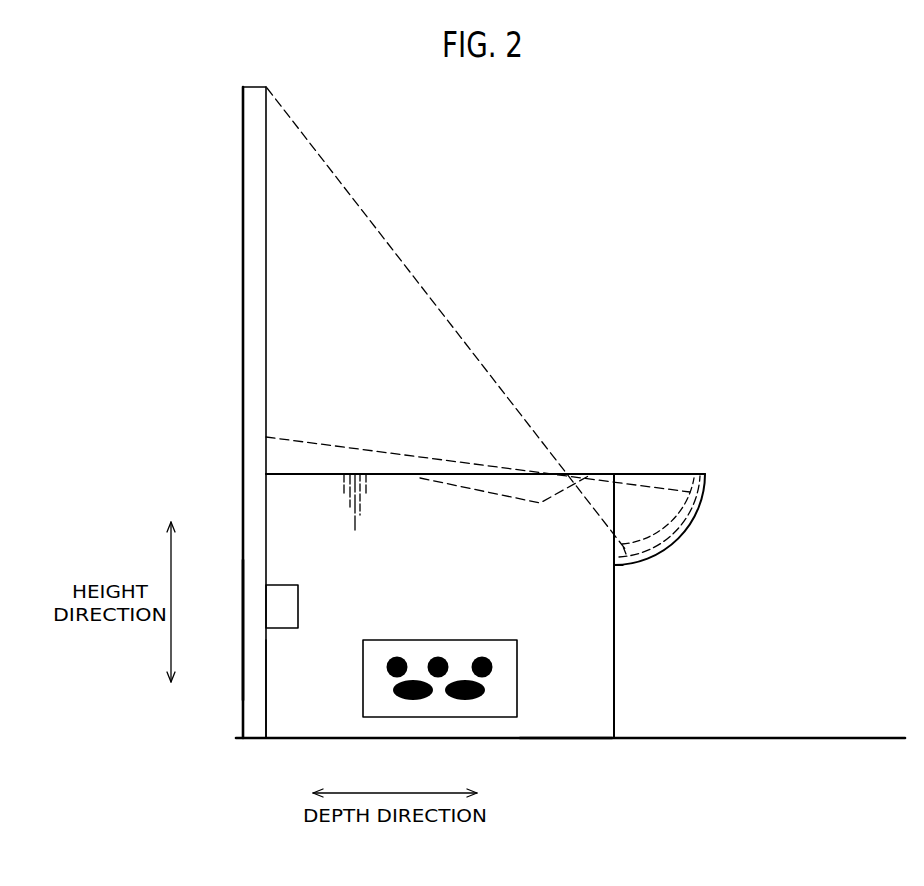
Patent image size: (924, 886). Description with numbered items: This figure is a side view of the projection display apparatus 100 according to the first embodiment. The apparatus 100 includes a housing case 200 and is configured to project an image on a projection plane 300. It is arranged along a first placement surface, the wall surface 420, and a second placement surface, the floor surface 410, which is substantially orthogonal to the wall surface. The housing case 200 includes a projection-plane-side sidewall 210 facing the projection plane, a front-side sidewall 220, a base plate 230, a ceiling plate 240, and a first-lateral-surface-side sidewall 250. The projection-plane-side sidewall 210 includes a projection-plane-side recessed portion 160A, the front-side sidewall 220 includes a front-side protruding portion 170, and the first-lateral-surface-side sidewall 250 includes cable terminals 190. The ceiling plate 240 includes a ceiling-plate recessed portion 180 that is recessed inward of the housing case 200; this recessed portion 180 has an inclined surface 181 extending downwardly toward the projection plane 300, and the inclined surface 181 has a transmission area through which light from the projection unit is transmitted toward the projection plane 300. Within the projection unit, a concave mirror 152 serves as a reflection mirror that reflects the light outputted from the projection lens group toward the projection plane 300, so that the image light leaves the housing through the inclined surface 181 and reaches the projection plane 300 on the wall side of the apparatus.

The projection display apparatus 100 is at (728, 440).
The concave mirror 152 is at (695, 520).
The projection-plane-side recessed portion 160A is at (298, 600).
The front-side protruding portion 170 is at (678, 541).
The ceiling-plate recessed portion 180 is at (480, 520).
The inclined surface 181 is at (562, 497).
The cable terminals 190 is at (450, 717).
The housing case 200 is at (614, 621).
The projection-plane-side sidewall 210 is at (266, 676).
The front-side sidewall 220 is at (614, 692).
The base plate 230 is at (555, 737).
The ceiling plate 240 is at (324, 474).
The first-lateral-surface-side sidewall 250 is at (283, 541).
The projection plane 300 is at (267, 318).
The floor surface 410 is at (830, 737).
The wall surface 420 is at (256, 620).